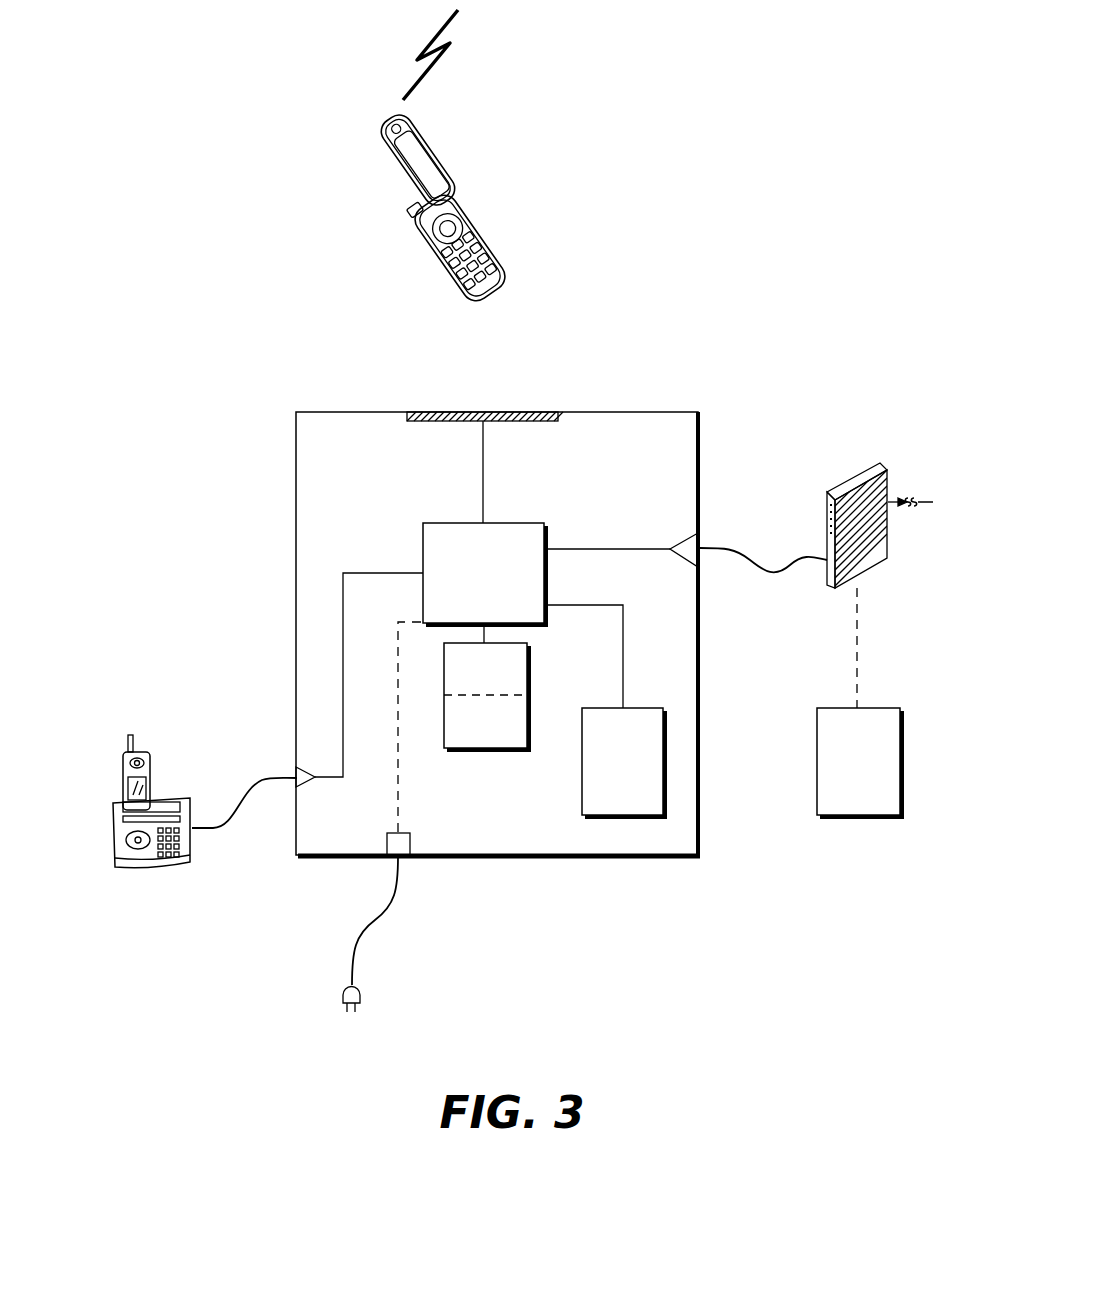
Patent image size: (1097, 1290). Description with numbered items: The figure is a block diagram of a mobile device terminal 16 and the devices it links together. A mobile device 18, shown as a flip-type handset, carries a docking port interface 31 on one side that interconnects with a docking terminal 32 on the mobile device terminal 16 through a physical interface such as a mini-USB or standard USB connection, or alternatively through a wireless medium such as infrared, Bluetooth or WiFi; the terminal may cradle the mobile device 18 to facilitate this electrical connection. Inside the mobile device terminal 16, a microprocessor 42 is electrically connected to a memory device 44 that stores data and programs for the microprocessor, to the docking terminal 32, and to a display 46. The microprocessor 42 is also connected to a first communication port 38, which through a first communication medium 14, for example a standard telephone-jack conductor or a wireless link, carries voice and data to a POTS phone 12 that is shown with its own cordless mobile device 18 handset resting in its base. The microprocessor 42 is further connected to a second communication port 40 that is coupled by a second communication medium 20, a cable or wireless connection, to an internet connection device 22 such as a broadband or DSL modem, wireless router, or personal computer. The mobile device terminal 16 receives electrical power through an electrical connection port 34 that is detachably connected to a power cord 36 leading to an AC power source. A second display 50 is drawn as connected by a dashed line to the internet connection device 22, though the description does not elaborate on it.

The POTS phone 12 is at (140, 872).
The first communication medium 14 is at (236, 818).
The mobile device terminal 16 is at (661, 447).
The mobile device 18 is at (124, 771).
The second communication medium 20 is at (763, 574).
The internet connection device 22 is at (884, 472).
The docking port interface 31 is at (493, 291).
The docking terminal 32 is at (455, 426).
The electrical connection port 34 is at (410, 841).
The power cord 36 is at (361, 999).
The first communication port 38 is at (306, 786).
The second communication port 40 is at (676, 560).
The microprocessor 42 is at (547, 537).
The memory device 44 is at (529, 667).
The display 46 is at (582, 802).
The remote display 50 is at (858, 818).